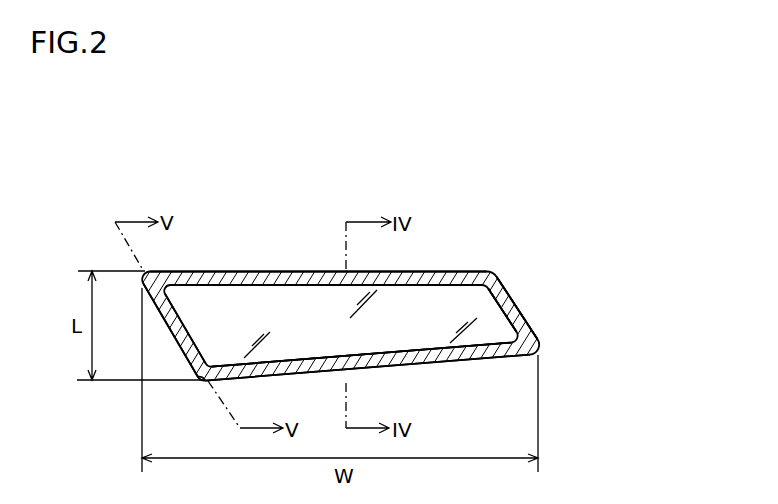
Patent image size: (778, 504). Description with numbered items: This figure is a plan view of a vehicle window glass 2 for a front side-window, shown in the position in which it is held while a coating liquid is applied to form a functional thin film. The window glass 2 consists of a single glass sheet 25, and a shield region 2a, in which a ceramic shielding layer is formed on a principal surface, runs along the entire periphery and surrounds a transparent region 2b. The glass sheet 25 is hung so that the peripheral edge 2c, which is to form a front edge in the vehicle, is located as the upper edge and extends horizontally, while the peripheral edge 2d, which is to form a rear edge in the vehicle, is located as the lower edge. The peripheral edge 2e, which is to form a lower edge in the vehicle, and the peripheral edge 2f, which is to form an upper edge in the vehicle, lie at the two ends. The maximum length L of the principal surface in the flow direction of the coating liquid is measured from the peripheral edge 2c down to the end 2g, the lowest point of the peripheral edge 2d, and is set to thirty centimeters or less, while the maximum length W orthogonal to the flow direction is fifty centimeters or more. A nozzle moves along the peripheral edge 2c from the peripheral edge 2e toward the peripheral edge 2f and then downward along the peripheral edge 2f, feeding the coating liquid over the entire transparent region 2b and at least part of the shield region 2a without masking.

The window glass 2 is at (492, 199).
The shield region 2a is at (503, 293).
The transparent region 2b is at (295, 318).
The peripheral edge 2c is at (228, 270).
The peripheral edge 2d is at (443, 366).
The peripheral edge 2e is at (176, 343).
The peripheral edge 2f is at (521, 307).
The end 2g is at (208, 381).
The glass sheet 25 is at (428, 310).